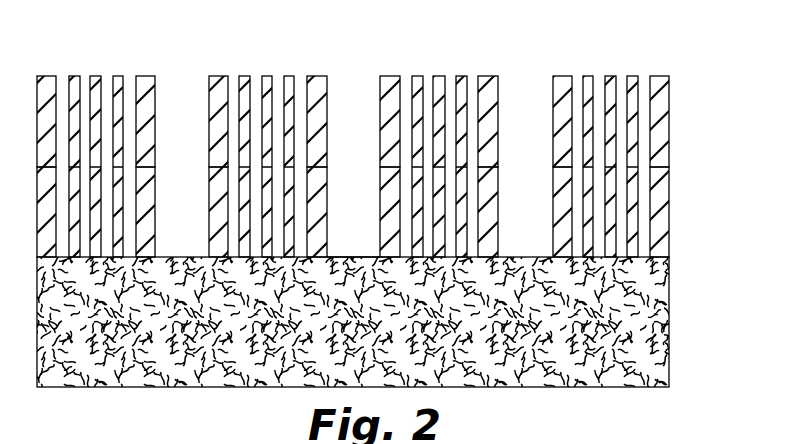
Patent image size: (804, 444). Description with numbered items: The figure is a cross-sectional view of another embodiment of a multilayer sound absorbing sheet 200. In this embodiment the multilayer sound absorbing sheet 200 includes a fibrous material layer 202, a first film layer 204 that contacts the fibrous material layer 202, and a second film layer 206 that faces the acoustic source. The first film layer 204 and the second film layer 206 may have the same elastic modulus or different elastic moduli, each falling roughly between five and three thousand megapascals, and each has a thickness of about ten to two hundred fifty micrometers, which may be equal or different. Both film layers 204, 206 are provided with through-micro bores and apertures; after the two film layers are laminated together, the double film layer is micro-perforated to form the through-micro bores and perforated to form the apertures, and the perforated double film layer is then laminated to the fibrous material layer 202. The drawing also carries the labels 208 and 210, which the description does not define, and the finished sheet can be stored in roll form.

The multilayer sound absorbing sheet 200 is at (703, 43).
The fibrous material layer 202 is at (660, 318).
The first film layer 204 is at (660, 200).
The second film layer 206 is at (660, 128).
The spacer 208 is at (643, 90).
The gap 210 is at (518, 95).